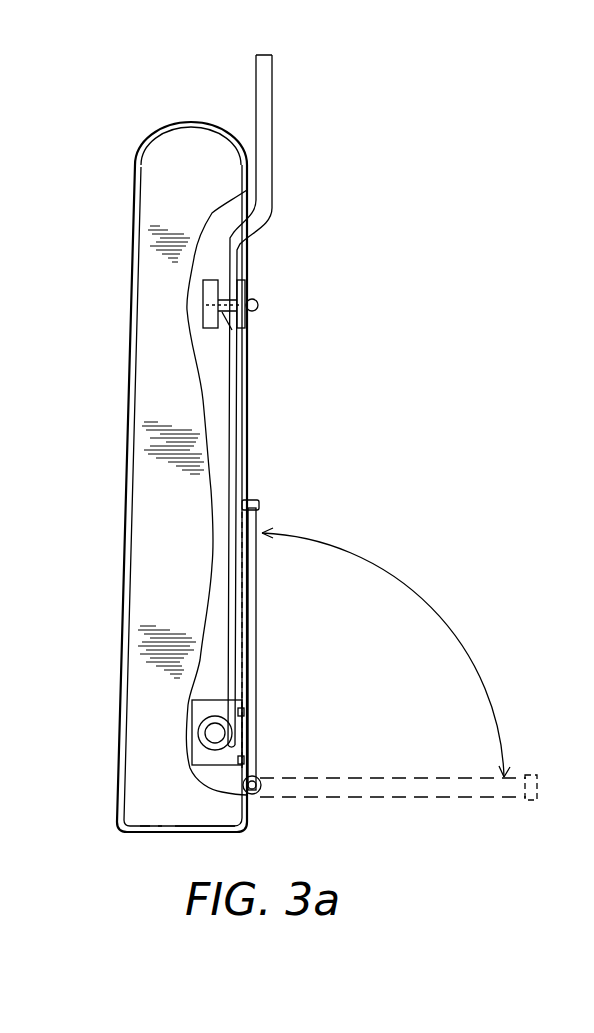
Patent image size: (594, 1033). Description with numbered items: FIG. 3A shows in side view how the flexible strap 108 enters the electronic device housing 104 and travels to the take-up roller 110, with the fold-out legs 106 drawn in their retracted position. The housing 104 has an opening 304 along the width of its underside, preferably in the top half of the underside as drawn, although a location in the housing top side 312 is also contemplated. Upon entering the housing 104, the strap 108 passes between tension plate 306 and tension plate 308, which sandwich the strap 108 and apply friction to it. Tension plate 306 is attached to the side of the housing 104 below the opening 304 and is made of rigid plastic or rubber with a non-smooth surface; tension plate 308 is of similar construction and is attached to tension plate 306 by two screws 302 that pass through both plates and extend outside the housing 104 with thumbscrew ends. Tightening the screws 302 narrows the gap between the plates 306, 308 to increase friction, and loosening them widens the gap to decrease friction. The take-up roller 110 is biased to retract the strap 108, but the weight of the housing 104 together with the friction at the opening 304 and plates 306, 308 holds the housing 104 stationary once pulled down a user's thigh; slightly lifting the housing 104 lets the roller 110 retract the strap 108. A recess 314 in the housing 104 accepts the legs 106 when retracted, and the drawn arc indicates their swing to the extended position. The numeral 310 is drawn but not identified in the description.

The housing 104 is at (128, 826).
The fold-out legs 106 is at (256, 607).
The strap 108 is at (273, 128).
The take-up roller 110 is at (218, 733).
The screws 302 is at (259, 305).
The opening 304 is at (247, 215).
The tension plate 306 is at (243, 285).
The tension plate 308 is at (205, 292).
The pin 310 is at (233, 330).
The top side 312 is at (161, 130).
The recess 314 is at (242, 578).